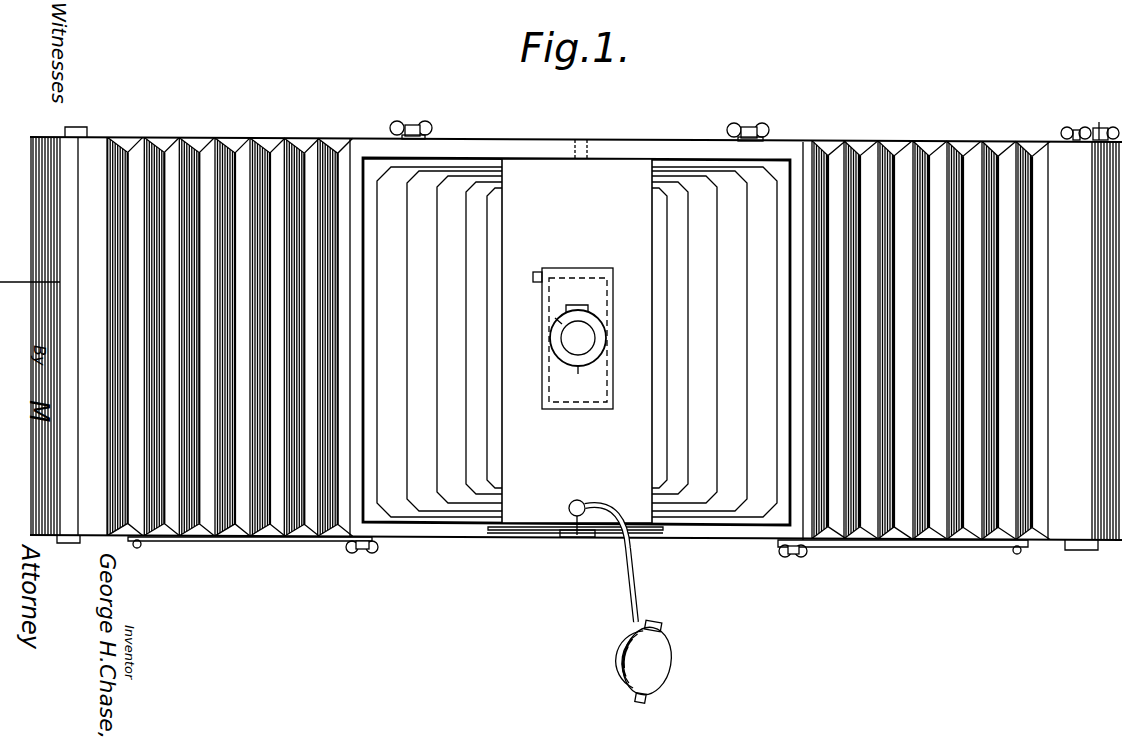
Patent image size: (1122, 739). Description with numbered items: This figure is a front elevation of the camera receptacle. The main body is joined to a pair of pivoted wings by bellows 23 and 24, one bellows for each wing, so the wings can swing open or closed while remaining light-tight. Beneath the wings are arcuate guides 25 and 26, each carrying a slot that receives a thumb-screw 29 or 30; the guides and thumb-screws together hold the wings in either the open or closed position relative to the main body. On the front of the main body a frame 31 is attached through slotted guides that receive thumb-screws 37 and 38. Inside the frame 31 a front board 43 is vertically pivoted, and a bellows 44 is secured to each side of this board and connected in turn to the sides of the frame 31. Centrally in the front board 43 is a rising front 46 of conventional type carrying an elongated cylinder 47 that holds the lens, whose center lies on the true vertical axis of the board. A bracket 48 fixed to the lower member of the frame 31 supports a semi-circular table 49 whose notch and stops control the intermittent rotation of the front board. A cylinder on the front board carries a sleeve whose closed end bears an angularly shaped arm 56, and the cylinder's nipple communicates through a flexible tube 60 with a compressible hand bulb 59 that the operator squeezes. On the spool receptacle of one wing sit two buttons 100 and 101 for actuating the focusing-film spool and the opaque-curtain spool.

The bellows 23 is at (216, 140).
The bellows 24 is at (913, 152).
The guide 25 is at (262, 542).
The guide 26 is at (900, 549).
The thumb-screw 29 is at (358, 553).
The thumb-screw 30 is at (805, 557).
The frame 31 is at (486, 143).
The thumb-screw 37 is at (413, 123).
The thumb-screw 38 is at (748, 125).
The front board 43 is at (577, 341).
The bellows 44 is at (478, 430).
The rising front 46 is at (585, 284).
The elongated cylinder 47 is at (578, 350).
The bracket 48 is at (562, 532).
The semi-circular table 49 is at (550, 534).
The angularly shaped arm 56 is at (577, 540).
The compressible hand bulb 59 is at (626, 650).
The flexible tube 60 is at (628, 578).
The button 100 is at (1066, 126).
The button 101 is at (1100, 127).